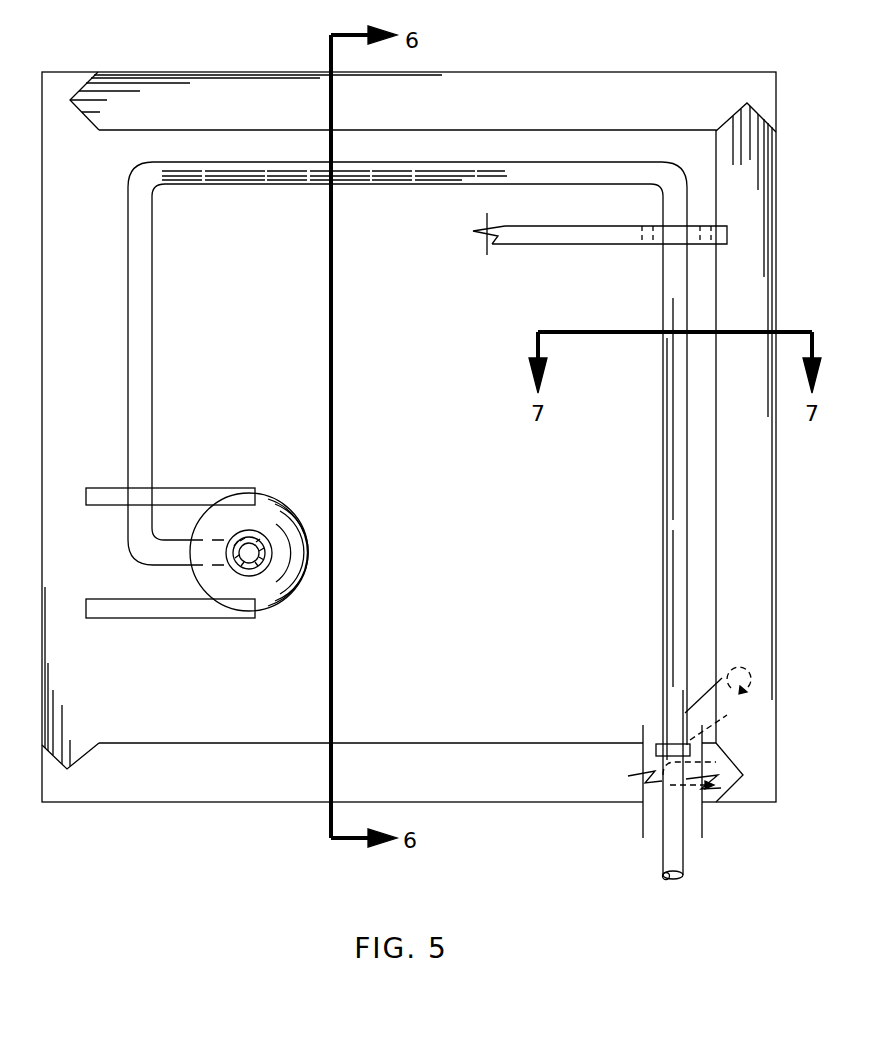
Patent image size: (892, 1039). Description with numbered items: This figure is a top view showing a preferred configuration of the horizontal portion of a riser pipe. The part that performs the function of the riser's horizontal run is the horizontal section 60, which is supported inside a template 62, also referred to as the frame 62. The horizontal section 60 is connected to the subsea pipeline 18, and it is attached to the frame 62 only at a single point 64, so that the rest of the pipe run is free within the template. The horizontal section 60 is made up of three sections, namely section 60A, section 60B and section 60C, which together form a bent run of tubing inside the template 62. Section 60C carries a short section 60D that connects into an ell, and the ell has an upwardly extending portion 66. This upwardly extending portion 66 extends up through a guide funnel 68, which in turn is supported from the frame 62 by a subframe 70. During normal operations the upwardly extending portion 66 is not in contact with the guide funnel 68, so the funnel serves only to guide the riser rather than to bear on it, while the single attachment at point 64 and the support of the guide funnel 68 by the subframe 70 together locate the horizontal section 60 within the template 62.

The template 62 is at (485, 78).
The horizontal section 60 is at (407, 518).
The section 60A is at (671, 304).
The section 60B is at (445, 174).
The section 60C is at (142, 399).
The short section 60D is at (172, 557).
The subframe 70 is at (176, 497).
The guide funnel 68 is at (230, 507).
The upwardly extending portion 66 is at (252, 537).
The point 64 is at (700, 763).
The subsea pipeline 18 is at (672, 857).